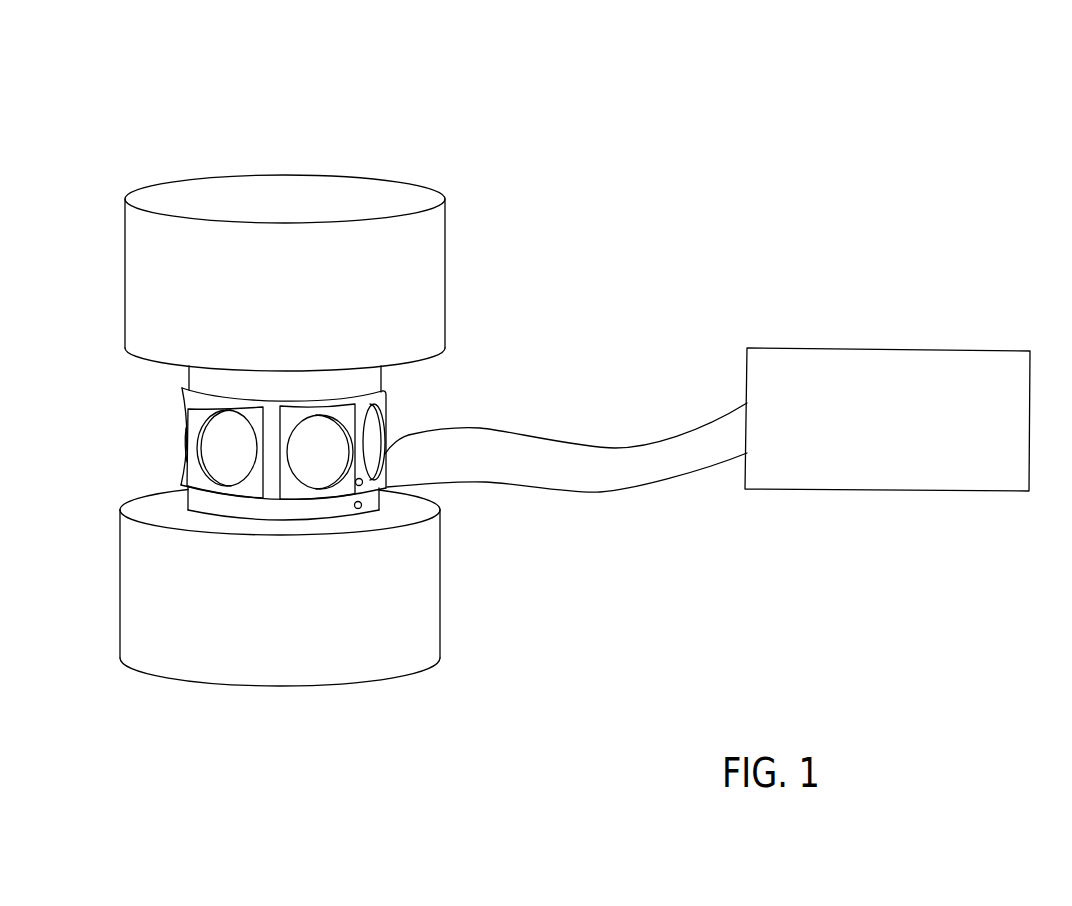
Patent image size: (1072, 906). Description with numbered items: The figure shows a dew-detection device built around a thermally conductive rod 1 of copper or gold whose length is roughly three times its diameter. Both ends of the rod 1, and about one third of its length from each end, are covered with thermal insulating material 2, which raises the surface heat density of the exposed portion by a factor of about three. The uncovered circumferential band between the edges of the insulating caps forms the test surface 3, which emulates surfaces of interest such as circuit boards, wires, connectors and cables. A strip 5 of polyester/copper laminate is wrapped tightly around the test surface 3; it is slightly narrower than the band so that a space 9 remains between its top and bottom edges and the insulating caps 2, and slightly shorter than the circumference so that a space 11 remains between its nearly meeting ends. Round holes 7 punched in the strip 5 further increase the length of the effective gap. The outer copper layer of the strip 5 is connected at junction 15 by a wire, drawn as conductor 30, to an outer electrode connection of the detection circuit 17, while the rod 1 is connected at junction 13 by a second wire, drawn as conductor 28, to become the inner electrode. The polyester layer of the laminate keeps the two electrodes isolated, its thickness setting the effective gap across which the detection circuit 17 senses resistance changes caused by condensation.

The thermally conductive rod 1 is at (138, 413).
The thermal insulating material 2 is at (362, 195).
The test surface 3 is at (213, 503).
The strip 5 is at (197, 407).
The round holes 7 is at (318, 437).
The space 9 is at (305, 383).
The space 11 is at (271, 490).
The junction 13 is at (361, 508).
The junction 15 is at (363, 479).
The detection circuit 17 is at (880, 347).
The conductor 28 is at (623, 490).
The conductor 30 is at (605, 447).